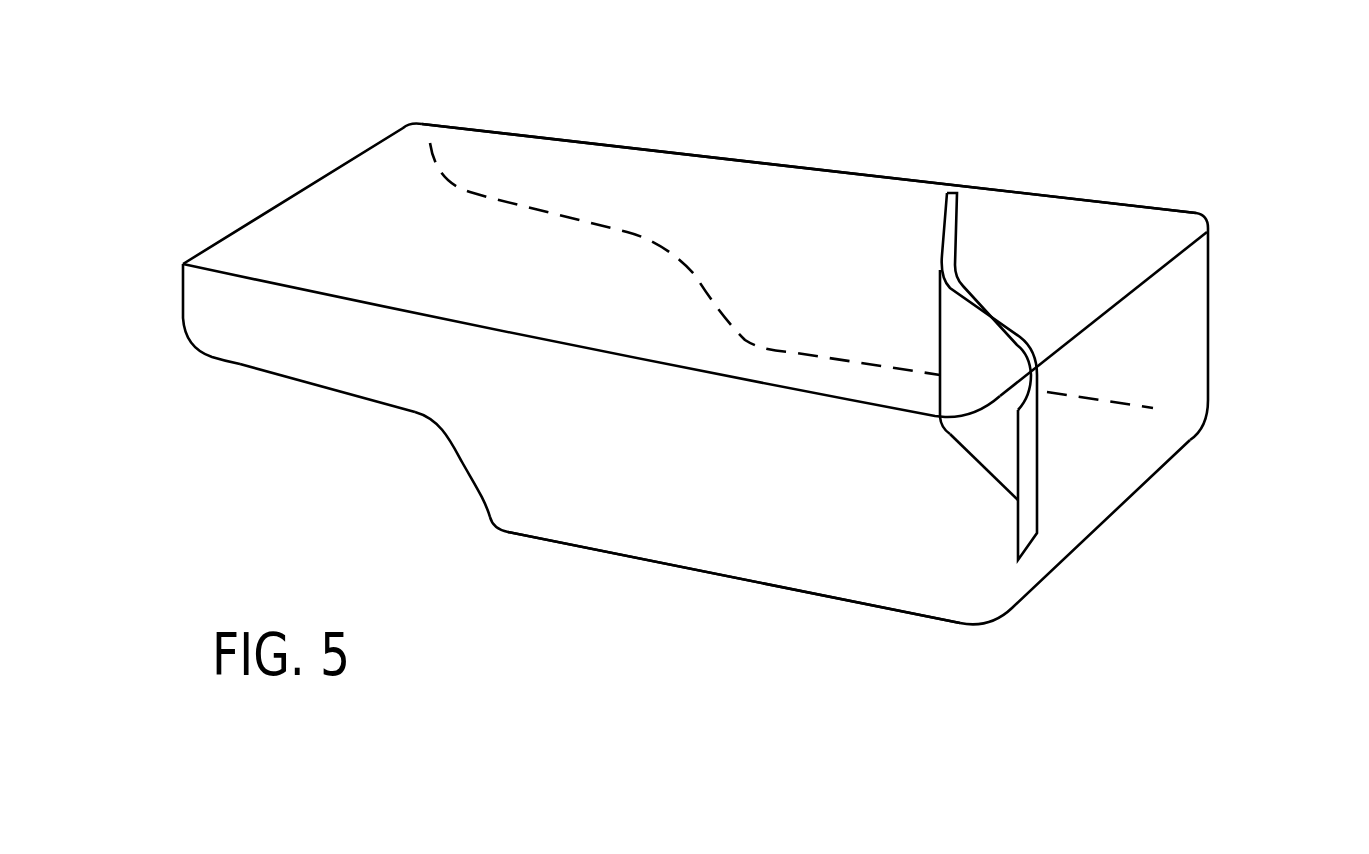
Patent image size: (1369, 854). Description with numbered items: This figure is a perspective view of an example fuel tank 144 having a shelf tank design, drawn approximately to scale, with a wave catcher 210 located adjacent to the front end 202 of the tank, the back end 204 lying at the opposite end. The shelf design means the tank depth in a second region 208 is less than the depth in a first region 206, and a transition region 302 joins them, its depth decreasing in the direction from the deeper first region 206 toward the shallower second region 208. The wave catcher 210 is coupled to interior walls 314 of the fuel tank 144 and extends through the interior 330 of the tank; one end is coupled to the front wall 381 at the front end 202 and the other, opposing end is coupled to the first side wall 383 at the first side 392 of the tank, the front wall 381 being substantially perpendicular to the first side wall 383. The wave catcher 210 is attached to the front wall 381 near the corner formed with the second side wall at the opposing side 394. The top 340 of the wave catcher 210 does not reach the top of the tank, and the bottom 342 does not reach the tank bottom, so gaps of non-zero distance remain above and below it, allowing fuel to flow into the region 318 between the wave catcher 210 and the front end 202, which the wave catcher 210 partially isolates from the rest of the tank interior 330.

The fuel tank 144 is at (315, 177).
The front end 202 is at (1234, 328).
The back end 204 is at (172, 219).
The first region 206 is at (490, 530).
The second region 208 is at (383, 443).
The wave catcher 210 is at (955, 343).
The transition region 302 is at (449, 470).
The interior walls 314 is at (603, 183).
The region 318 is at (1050, 255).
The interior 330 is at (749, 285).
The top of the wave catcher 340 is at (944, 225).
The bottom of the wave catcher 342 is at (980, 465).
The front wall 381 is at (1112, 473).
The first side wall 383 is at (1003, 190).
The first side 392 is at (729, 141).
The side 394 is at (531, 472).